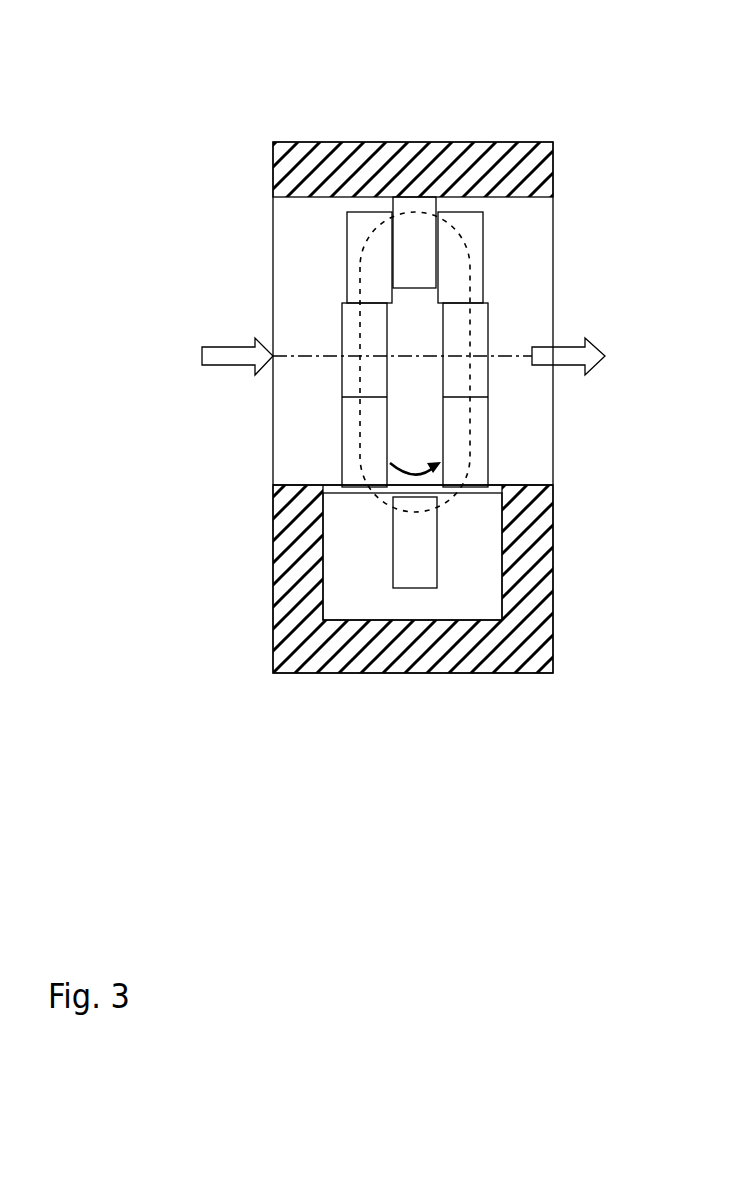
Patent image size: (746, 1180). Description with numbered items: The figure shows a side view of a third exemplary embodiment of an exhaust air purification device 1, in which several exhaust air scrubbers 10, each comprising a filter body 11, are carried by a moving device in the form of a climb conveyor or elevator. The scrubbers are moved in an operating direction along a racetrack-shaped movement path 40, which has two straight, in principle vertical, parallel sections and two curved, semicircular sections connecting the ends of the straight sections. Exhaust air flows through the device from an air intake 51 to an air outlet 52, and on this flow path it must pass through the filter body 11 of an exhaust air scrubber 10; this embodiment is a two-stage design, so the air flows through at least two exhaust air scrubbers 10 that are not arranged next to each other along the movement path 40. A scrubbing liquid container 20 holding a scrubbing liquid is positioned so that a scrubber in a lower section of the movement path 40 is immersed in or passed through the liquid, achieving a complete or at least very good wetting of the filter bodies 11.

The exhaust air purification device 1 is at (182, 116).
The exhaust air scrubber 10 is at (477, 371).
The filter body 11 is at (427, 266).
The scrubbing liquid container 20 is at (462, 565).
The movement path 40 is at (460, 236).
The air intake 51 is at (213, 356).
The air outlet 52 is at (588, 356).